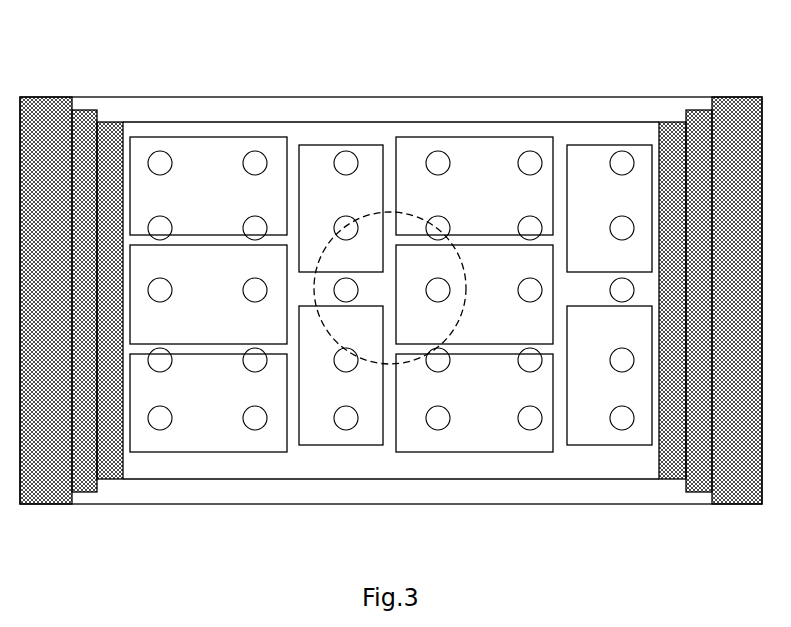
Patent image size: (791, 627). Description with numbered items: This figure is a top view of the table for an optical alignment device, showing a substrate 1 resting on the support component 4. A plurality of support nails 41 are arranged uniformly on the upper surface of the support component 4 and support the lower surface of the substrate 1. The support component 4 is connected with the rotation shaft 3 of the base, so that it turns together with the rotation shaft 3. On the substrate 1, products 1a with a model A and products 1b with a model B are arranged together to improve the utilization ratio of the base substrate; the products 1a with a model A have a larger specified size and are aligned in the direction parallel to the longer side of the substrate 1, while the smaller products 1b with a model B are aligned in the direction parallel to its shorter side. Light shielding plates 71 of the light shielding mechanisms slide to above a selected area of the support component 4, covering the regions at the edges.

The light shielding plate 71 is at (116, 122).
The support component 4 is at (240, 97).
The substrate 1 is at (447, 122).
The products with a model A 1a is at (222, 452).
The products with a model B 1b is at (361, 445).
The support nails 41 is at (168, 160).
The rotation shaft 3 is at (314, 318).